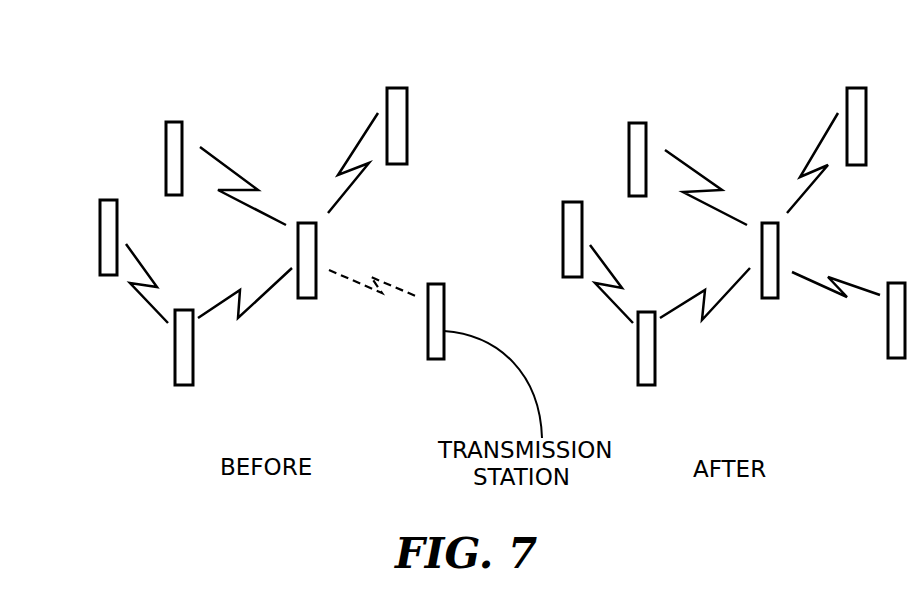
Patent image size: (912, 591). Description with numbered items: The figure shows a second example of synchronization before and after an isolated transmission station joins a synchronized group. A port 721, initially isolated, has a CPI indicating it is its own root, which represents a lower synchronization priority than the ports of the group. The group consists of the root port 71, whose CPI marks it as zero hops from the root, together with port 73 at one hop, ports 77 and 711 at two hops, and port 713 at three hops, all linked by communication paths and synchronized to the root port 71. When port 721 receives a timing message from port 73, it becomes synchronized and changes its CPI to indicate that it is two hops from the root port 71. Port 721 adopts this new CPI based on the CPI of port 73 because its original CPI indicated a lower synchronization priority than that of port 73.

The root port 71 is at (184, 138).
The port 77 is at (387, 98).
The port 713 is at (100, 222).
The port 73 is at (316, 258).
The port 711 is at (238, 392).
The port 721 is at (428, 347).